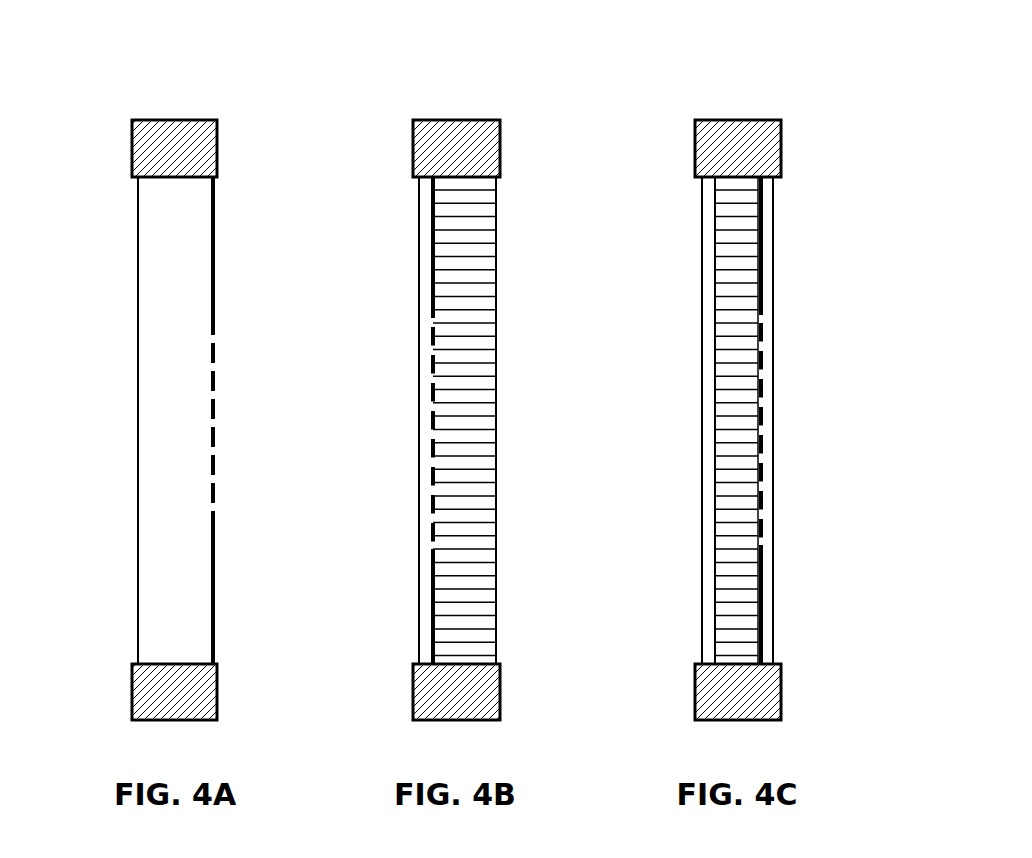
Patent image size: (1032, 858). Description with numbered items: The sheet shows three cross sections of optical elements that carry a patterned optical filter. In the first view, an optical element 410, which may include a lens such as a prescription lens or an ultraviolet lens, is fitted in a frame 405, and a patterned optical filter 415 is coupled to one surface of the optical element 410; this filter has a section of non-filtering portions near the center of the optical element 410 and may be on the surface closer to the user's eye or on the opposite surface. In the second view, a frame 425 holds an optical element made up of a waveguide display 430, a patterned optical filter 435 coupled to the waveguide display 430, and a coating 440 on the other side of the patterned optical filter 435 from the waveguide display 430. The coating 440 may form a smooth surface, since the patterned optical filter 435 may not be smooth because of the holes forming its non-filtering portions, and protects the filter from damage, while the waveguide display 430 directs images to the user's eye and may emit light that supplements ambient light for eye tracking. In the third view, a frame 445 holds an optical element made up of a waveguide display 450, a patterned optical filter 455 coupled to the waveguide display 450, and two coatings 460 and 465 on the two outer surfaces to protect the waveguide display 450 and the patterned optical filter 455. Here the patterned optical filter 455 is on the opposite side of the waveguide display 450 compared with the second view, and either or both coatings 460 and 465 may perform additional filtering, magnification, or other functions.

In FIG. 4A, the frame 405 is at (178, 120).
In FIG. 4A, the optical element 410 is at (165, 328).
In FIG. 4A, the patterned optical filter 415 is at (213, 303).
In FIG. 4B, the frame 425 is at (460, 120).
In FIG. 4B, the waveguide display 430 is at (497, 543).
In FIG. 4B, the patterned optical filter 435 is at (433, 323).
In FIG. 4B, the coating 440 is at (419, 472).
In FIG. 4C, the frame 445 is at (742, 120).
In FIG. 4C, the waveguide display 450 is at (715, 325).
In FIG. 4C, the patterned optical filter 455 is at (762, 303).
In FIG. 4C, the coating 460 is at (773, 327).
In FIG. 4C, the coating 465 is at (702, 437).